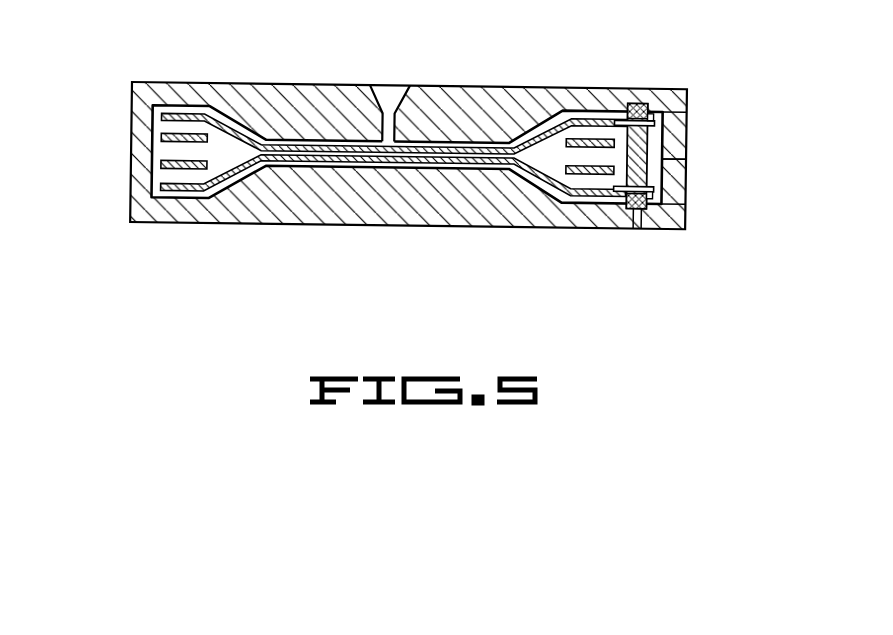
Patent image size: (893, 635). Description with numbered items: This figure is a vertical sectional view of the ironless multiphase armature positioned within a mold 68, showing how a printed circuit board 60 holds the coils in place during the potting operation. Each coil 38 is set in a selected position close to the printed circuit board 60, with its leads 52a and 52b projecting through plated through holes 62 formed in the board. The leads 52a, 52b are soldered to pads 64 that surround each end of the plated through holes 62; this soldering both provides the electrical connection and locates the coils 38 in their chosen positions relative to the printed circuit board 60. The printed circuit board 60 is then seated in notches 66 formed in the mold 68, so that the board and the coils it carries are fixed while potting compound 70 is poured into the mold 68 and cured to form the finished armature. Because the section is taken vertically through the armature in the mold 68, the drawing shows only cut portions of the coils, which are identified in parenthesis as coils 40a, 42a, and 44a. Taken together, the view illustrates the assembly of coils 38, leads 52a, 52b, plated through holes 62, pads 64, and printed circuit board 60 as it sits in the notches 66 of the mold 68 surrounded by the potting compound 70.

The mold 68 is at (292, 84).
The potting compound 70 is at (388, 115).
The coil 38 is at (548, 112).
The coil 40a is at (173, 110).
The coil 42a is at (170, 137).
The coil 44a is at (165, 163).
The printed circuit board 60 is at (640, 156).
The plated through holes 62 is at (637, 104).
The notches 66 is at (649, 119).
The pads 64 is at (656, 116).
The lead 52b is at (680, 112).
The lead 52a is at (668, 190).